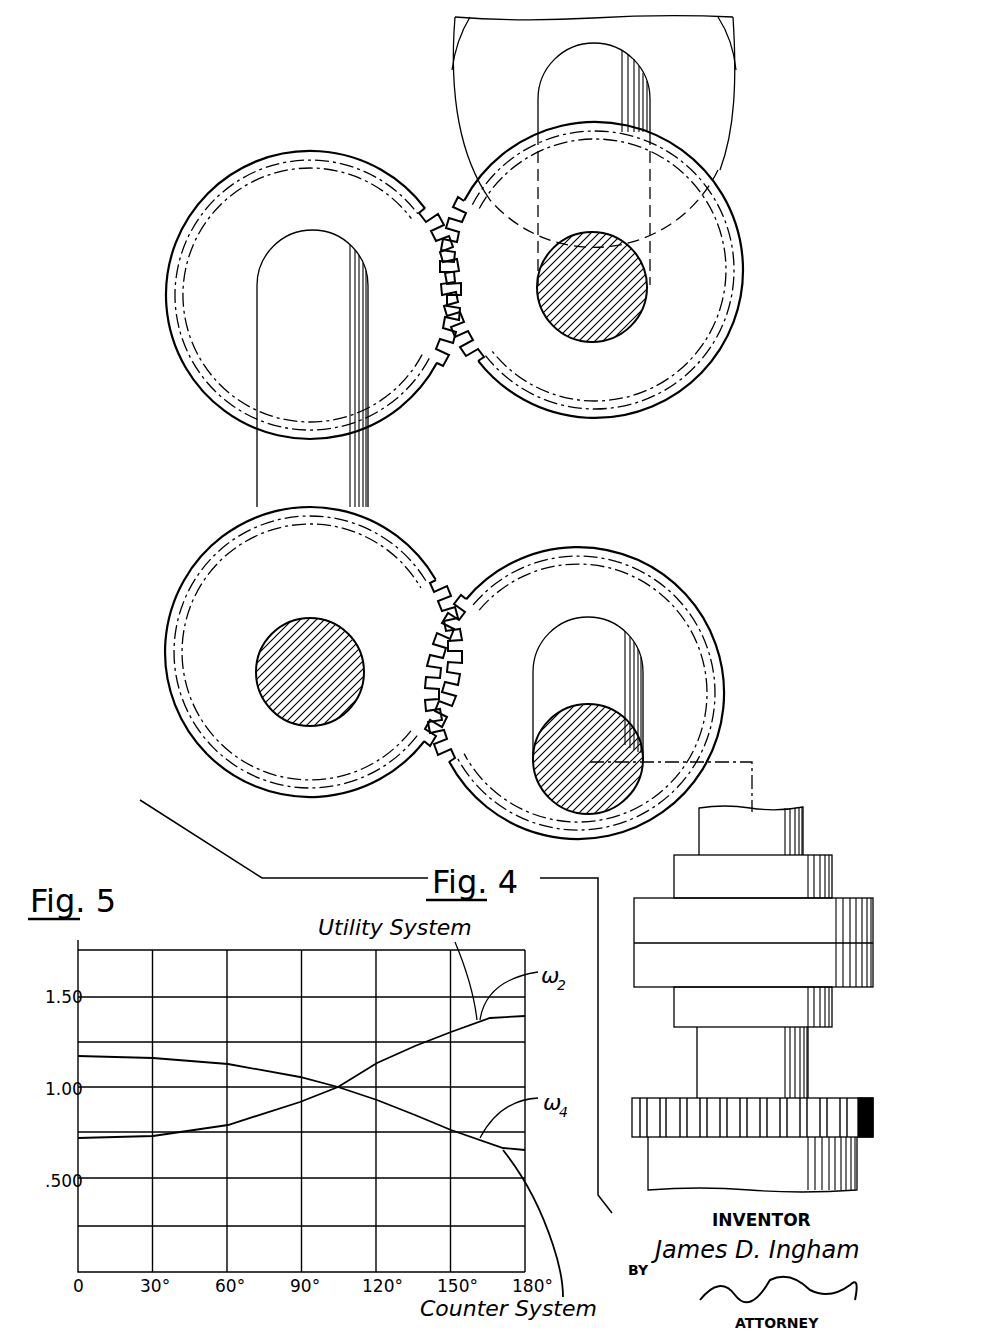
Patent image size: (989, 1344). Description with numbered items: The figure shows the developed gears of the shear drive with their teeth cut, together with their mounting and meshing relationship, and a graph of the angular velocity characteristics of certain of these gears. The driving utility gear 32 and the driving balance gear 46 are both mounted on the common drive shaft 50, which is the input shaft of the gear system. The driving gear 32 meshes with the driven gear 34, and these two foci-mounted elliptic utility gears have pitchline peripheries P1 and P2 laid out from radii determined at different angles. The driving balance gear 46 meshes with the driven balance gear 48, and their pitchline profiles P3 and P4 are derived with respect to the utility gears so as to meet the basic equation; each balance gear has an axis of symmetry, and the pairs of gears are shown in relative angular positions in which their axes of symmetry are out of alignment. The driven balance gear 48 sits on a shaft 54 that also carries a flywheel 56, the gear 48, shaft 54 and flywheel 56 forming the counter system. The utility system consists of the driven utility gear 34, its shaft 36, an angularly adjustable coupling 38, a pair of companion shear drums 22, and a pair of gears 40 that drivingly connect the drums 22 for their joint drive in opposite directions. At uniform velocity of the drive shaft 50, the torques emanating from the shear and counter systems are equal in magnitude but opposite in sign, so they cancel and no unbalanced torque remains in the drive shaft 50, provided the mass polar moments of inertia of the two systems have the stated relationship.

The shear drum 22 is at (698, 1168).
The driving gear 32 is at (197, 543).
The driven gear 34 is at (702, 603).
The shaft 36 is at (630, 694).
The angularly adjustable coupling 38 is at (813, 856).
The gears 40 is at (820, 1113).
The driving balance gear 46 is at (335, 149).
The driven balance gear 48 is at (744, 239).
The drive shaft 50 is at (268, 462).
The shaft 54 is at (645, 105).
The flywheel 56 is at (722, 70).
The pitchline periphery P1 is at (398, 546).
The pitchline periphery P2 is at (656, 572).
The pitchline profile P3 is at (372, 170).
The pitchline profile P4 is at (735, 298).